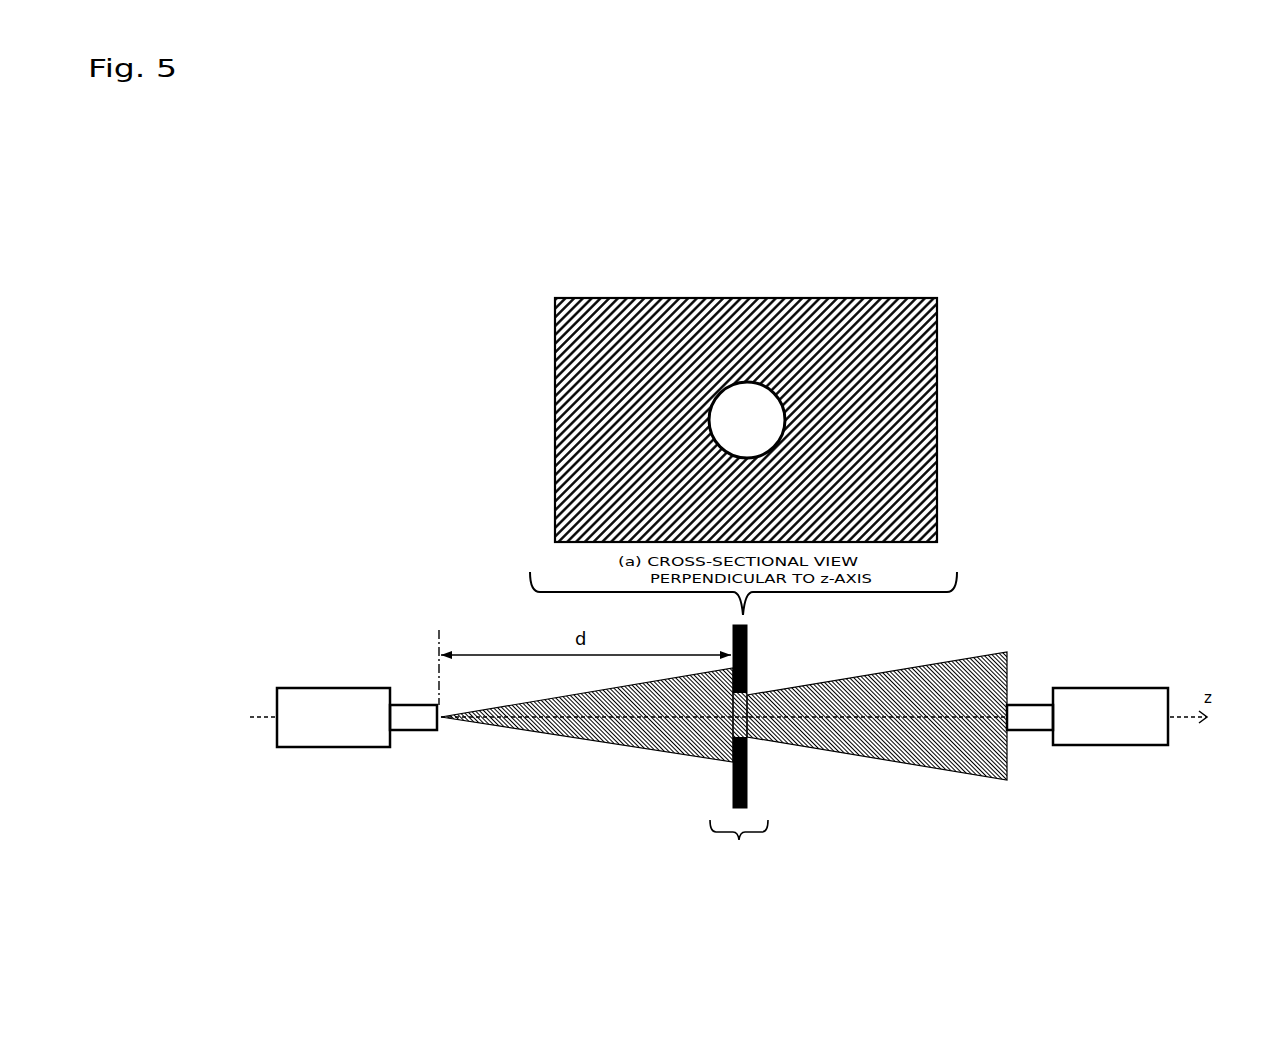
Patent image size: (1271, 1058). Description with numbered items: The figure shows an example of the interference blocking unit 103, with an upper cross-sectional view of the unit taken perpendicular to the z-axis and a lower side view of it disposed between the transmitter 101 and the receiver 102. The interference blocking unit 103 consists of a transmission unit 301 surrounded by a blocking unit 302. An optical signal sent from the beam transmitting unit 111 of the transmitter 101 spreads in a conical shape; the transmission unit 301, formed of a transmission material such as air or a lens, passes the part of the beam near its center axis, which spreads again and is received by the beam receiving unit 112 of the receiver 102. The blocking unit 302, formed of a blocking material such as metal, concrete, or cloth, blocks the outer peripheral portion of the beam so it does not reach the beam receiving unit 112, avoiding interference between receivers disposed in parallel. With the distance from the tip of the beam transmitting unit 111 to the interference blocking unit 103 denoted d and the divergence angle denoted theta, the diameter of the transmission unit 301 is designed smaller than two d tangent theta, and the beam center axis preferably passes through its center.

The interference blocking unit 103 is at (524, 350).
The blocking unit 302 is at (903, 350).
The transmission unit 301 is at (760, 422).
The transmitter 101 is at (328, 688).
The beam transmitting unit 111 is at (424, 731).
The receiver 102 is at (1104, 688).
The beam receiving unit 112 is at (1027, 732).